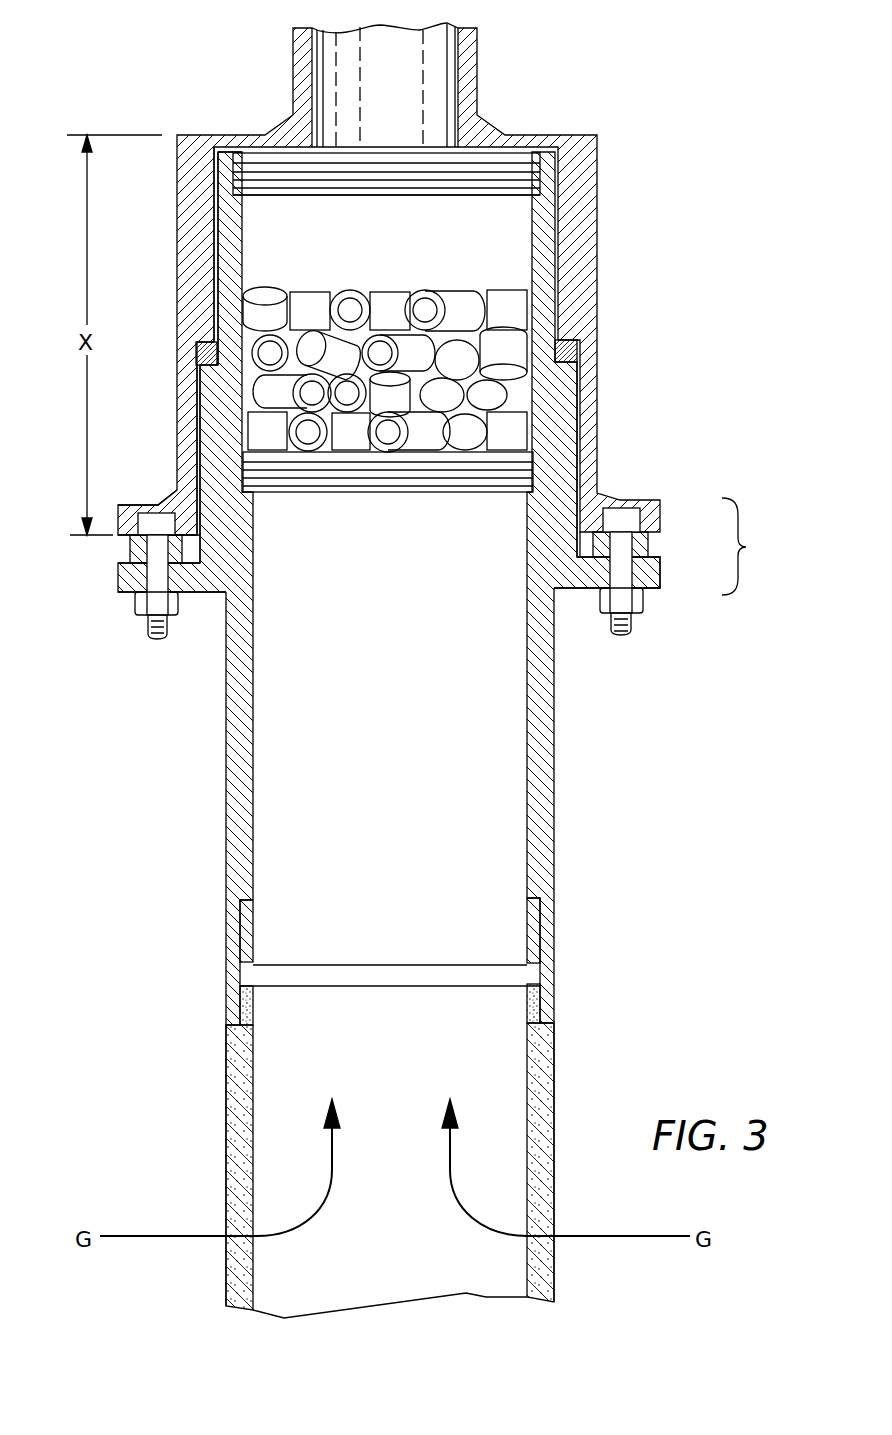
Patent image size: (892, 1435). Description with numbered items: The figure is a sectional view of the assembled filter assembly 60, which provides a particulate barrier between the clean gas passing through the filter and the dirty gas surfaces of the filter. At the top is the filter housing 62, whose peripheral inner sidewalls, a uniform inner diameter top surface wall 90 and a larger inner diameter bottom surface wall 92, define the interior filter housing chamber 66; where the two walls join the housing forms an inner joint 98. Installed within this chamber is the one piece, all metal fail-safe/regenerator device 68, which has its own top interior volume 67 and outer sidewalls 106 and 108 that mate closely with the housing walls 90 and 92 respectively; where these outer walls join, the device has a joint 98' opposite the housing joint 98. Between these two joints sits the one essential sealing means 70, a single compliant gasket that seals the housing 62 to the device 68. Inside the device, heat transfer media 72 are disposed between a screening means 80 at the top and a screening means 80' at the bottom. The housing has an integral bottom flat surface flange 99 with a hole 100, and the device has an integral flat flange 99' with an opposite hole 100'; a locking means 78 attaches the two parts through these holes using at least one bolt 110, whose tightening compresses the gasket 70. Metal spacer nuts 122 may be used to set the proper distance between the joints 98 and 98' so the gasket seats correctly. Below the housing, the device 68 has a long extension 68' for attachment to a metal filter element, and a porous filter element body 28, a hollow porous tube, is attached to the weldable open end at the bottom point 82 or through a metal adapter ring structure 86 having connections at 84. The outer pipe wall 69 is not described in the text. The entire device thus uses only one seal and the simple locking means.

The filter assembly 60 is at (55, 620).
The filter housing 62 is at (598, 214).
The interior filter housing chamber 66 is at (557, 180).
The top interior volume 67 is at (475, 223).
The fail-safe/regenerator device 68 is at (389, 588).
The long extension 68' is at (355, 806).
The outer pipe 69 is at (556, 1080).
The sealing means 70 is at (196, 353).
The heat transfer media 72 is at (455, 300).
The locking means 78 is at (749, 546).
The screening means 80 is at (386, 224).
The screening means 80' is at (388, 489).
The bottom point 82 is at (253, 987).
The connections 84 is at (555, 898).
The metal adapter ring structure 86 is at (548, 975).
The top surface wall 90 is at (224, 200).
The bottom surface wall 92 is at (210, 420).
The inner joint 98 is at (173, 244).
The joint 98' is at (168, 450).
The bottom flat surface flange 99 is at (649, 532).
The flat outside surface flange 99' is at (639, 570).
The hole 100 is at (157, 498).
The hole 100' is at (172, 623).
The outer sidewall 106 is at (215, 237).
The outer sidewall 108 is at (578, 436).
The bolt 110 is at (148, 626).
The metal spacer nut 122 is at (130, 545).
The porous filter element body 28 is at (226, 1137).